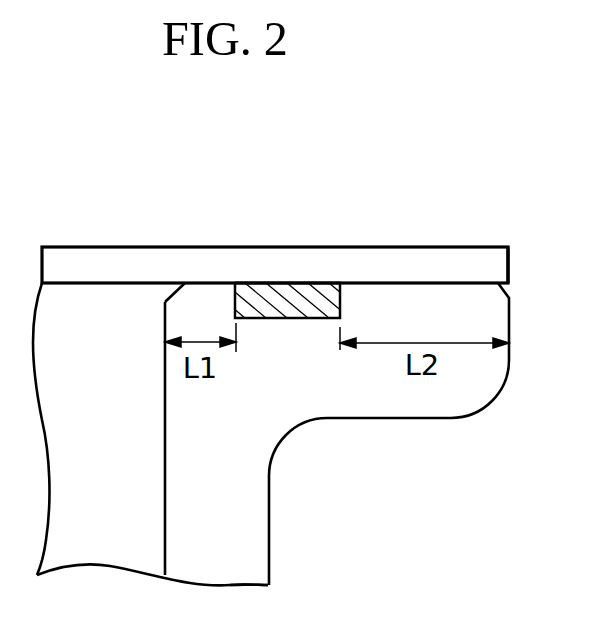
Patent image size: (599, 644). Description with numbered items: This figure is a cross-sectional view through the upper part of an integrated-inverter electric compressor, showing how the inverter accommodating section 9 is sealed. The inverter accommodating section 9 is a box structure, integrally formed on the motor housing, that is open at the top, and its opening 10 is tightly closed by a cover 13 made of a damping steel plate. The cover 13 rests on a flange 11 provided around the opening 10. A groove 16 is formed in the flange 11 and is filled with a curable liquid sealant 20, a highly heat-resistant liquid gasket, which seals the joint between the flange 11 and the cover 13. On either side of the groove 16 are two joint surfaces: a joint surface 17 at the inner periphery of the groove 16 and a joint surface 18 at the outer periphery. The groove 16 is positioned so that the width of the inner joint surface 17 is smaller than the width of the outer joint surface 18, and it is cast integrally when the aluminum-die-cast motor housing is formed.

The inverter accommodating section 9 is at (250, 562).
The opening 10 is at (90, 302).
The flange 11 is at (362, 400).
The cover 13 is at (377, 262).
The groove 16 is at (282, 318).
The joint surface 17 is at (217, 283).
The joint surface 18 is at (450, 282).
The curable liquid sealant 20 is at (288, 297).